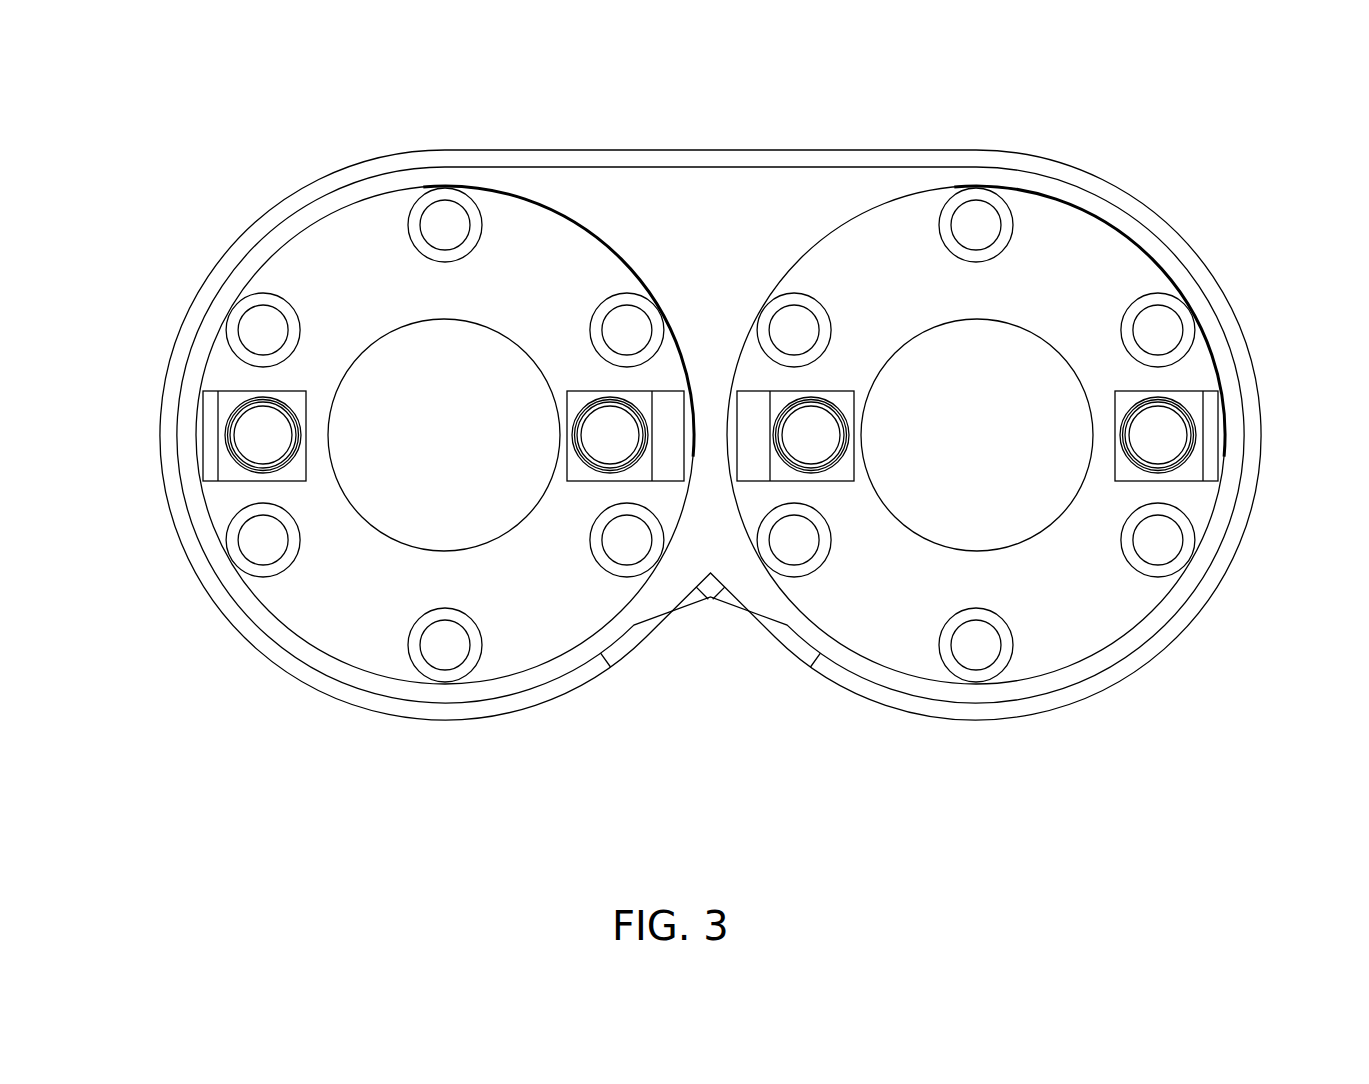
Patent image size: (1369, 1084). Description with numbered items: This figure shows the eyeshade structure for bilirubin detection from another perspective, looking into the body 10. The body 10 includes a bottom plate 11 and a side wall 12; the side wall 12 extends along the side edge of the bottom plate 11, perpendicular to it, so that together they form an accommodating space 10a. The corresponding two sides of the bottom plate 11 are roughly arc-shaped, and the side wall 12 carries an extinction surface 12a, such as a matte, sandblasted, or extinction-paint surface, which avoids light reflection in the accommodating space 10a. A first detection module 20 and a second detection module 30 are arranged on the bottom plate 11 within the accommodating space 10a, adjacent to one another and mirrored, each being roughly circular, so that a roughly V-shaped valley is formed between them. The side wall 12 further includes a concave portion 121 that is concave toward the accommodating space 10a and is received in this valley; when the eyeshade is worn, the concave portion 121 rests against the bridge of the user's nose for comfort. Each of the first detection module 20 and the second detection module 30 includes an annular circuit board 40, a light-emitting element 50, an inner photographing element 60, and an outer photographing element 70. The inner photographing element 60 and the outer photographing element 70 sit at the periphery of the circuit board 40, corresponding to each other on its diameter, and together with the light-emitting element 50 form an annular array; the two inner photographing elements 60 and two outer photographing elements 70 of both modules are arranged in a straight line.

The body 10 is at (740, 149).
The accommodating space 10a is at (710, 381).
The bottom plate 11 is at (773, 232).
The side wall 12 is at (245, 282).
The extinction surface 12a is at (227, 492).
The concave portion 121 is at (746, 611).
The first detection module 20 is at (384, 399).
The second detection module 30 is at (1085, 265).
The circuit board 40 is at (333, 602).
The light-emitting element 50 is at (243, 566).
The inner photographing element 60 is at (607, 427).
The outer photographing element 70 is at (263, 433).